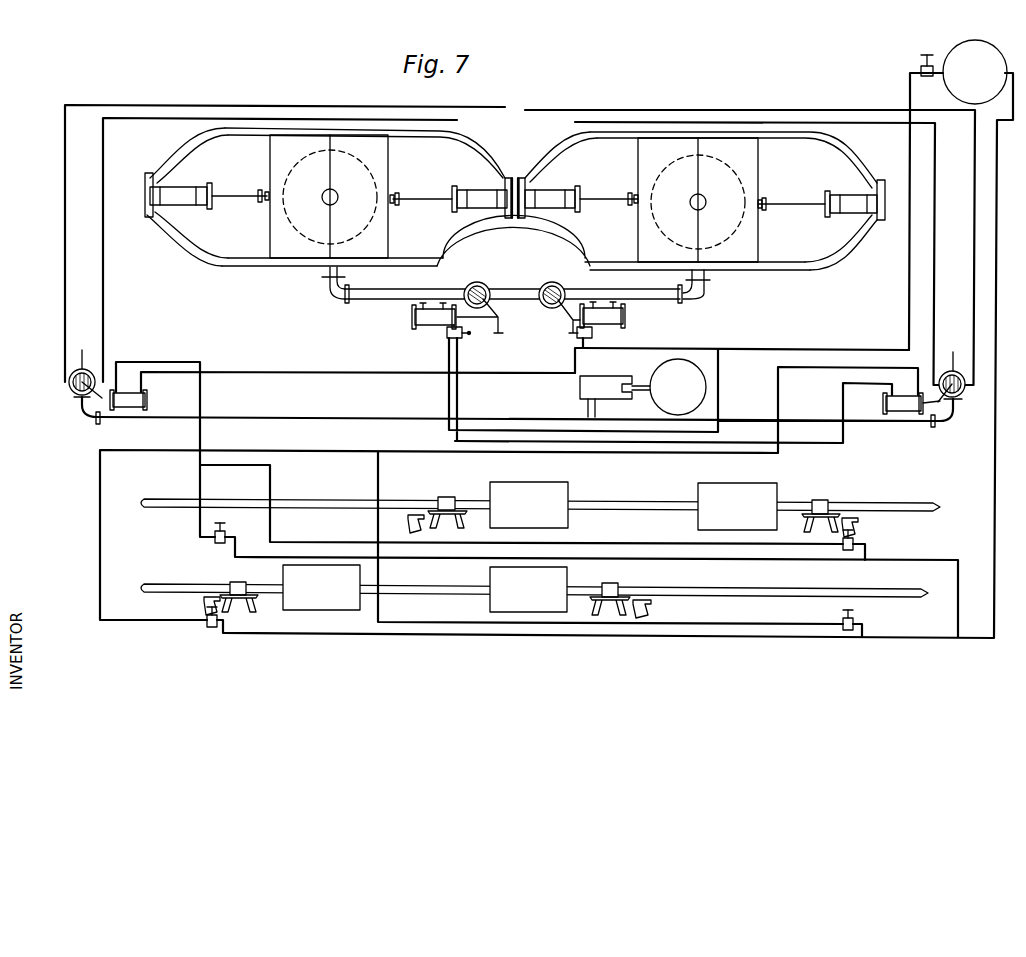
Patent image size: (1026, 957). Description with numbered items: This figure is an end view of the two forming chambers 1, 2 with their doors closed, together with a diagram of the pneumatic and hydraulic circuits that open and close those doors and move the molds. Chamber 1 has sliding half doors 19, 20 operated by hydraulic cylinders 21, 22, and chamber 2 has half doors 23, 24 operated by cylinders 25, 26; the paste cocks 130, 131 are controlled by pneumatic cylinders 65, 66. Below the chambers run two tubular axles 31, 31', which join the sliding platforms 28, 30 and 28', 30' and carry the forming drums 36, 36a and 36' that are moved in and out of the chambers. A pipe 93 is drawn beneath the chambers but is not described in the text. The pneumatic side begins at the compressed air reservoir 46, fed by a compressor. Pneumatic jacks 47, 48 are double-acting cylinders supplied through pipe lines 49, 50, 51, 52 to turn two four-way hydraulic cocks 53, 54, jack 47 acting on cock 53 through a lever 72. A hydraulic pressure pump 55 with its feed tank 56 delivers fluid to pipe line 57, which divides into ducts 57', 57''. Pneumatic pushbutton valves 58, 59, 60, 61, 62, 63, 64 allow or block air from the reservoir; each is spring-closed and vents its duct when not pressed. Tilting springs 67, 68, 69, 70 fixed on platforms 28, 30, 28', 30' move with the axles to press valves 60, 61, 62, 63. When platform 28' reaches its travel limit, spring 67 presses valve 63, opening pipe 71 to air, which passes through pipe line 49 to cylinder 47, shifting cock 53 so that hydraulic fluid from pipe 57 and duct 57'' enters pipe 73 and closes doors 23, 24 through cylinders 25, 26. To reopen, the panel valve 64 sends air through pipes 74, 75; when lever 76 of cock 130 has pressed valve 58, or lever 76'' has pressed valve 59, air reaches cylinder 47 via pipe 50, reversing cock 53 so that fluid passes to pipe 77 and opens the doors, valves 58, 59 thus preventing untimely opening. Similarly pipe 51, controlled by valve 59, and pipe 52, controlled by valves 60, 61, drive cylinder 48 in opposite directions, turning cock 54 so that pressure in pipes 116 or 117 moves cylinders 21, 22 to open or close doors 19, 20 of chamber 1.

The forming chamber 1 is at (262, 135).
The forming chamber 2 is at (650, 132).
The half door 19 is at (285, 255).
The half door 20 is at (365, 250).
The hydraulic cylinder 21 is at (474, 190).
The hydraulic cylinder 22 is at (180, 198).
The half door 23 is at (742, 250).
The half door 24 is at (672, 255).
The hydraulic cylinder 25 is at (545, 190).
The hydraulic cylinder 26 is at (862, 207).
The platform 28 is at (836, 502).
The platform 28' is at (623, 590).
The platform 30 is at (454, 501).
The platform 30' is at (251, 605).
The tubular axle 31 is at (540, 492).
The tubular axle 31' is at (530, 587).
The forming drum 36 is at (548, 498).
The forming drum 36' is at (321, 598).
The forming drum 36a is at (777, 492).
The compressed air reservoir 46 is at (986, 64).
The pneumatic jack 47 is at (904, 414).
The pneumatic jack 48 is at (127, 410).
The pipe line 49 is at (348, 452).
The pipe line 50 is at (870, 413).
The pipe line 51 is at (222, 372).
The pipe line 52 is at (135, 362).
The four-way hydraulic cock 53 is at (965, 392).
The four-way hydraulic cock 54 is at (70, 390).
The hydraulic pressure pump 55 is at (604, 380).
The feed tank 56 is at (680, 372).
The pipe line 57 is at (563, 405).
The duct 57' is at (514, 409).
The duct 57'' is at (825, 410).
The pneumatic pushbutton valve 58 is at (447, 335).
The pneumatic pushbutton valve 59 is at (593, 335).
The pneumatic pushbutton valve 60 is at (216, 545).
The pneumatic pushbutton valve 61 is at (856, 544).
The pneumatic pushbutton valve 62 is at (856, 620).
The pneumatic pushbutton valve 63 is at (206, 628).
The pneumatic pushbutton valve 64 is at (920, 66).
The pneumatic cylinder 65 is at (414, 320).
The pneumatic cylinder 66 is at (626, 318).
The tilting spring 67 is at (203, 608).
The tilting spring 68 is at (652, 611).
The tilting spring 69 is at (407, 526).
The tilting spring 70 is at (859, 528).
The pipe 71 is at (996, 471).
The lever 72 is at (948, 420).
The pipe 73 is at (738, 110).
The pipe 74 is at (934, 72).
The pipe 75 is at (757, 230).
The lever 76 is at (494, 318).
The lever 76'' is at (557, 323).
The pipe 77 is at (686, 122).
The pipe 93 is at (360, 304).
The pipe 116 is at (132, 295).
The pipe 117 is at (65, 196).
The paste cock 130 is at (477, 282).
The paste cock 131 is at (552, 282).